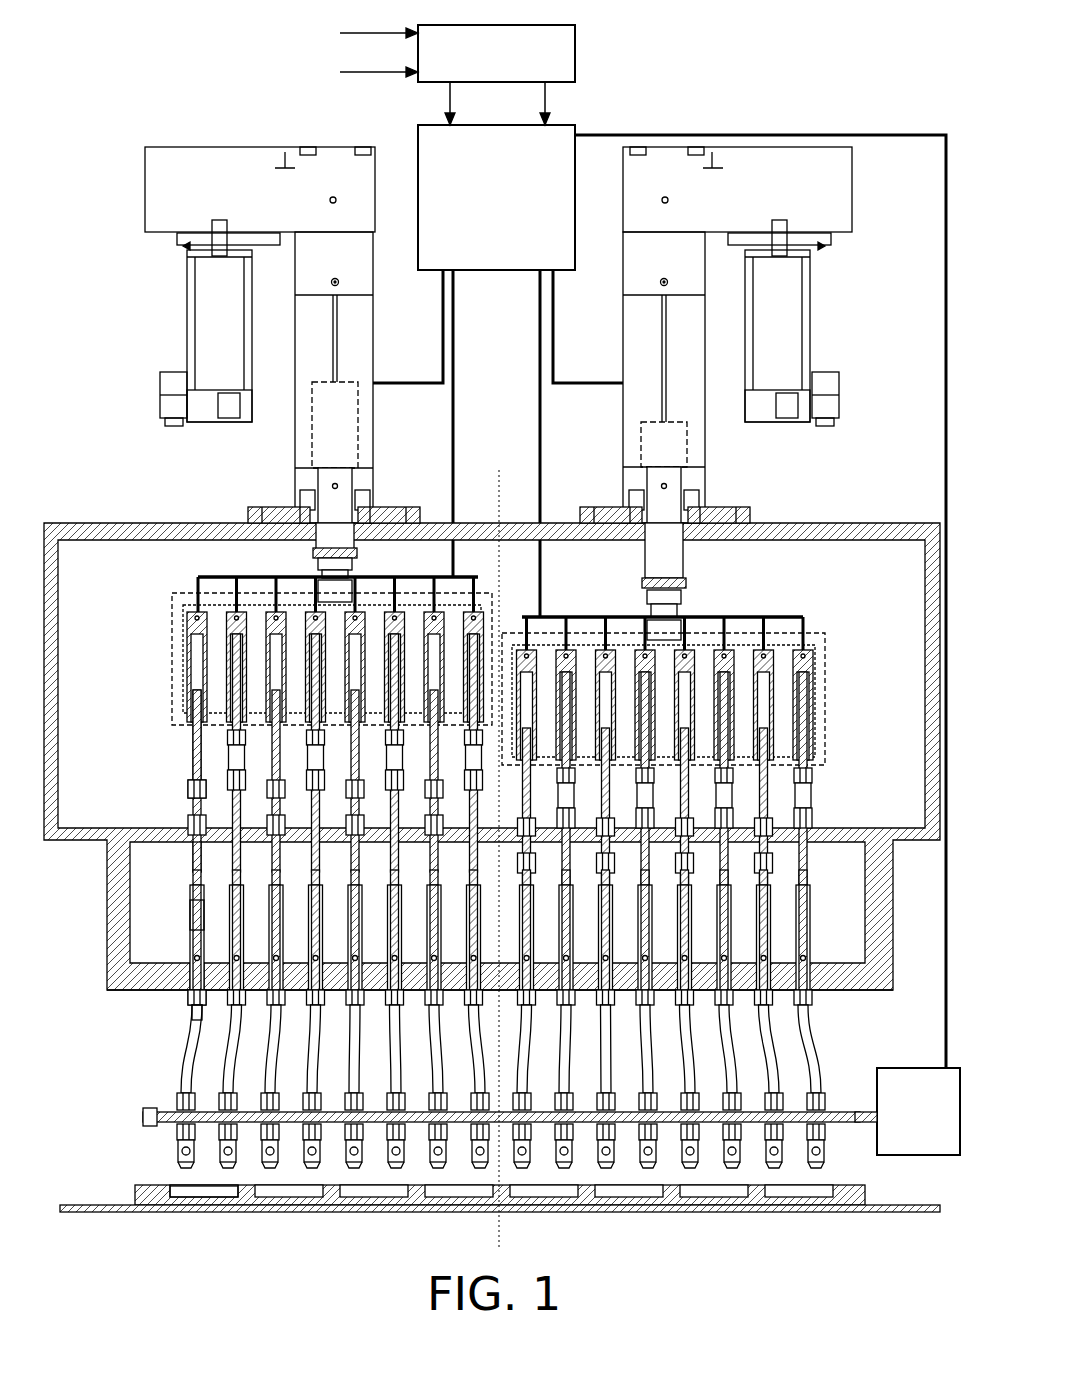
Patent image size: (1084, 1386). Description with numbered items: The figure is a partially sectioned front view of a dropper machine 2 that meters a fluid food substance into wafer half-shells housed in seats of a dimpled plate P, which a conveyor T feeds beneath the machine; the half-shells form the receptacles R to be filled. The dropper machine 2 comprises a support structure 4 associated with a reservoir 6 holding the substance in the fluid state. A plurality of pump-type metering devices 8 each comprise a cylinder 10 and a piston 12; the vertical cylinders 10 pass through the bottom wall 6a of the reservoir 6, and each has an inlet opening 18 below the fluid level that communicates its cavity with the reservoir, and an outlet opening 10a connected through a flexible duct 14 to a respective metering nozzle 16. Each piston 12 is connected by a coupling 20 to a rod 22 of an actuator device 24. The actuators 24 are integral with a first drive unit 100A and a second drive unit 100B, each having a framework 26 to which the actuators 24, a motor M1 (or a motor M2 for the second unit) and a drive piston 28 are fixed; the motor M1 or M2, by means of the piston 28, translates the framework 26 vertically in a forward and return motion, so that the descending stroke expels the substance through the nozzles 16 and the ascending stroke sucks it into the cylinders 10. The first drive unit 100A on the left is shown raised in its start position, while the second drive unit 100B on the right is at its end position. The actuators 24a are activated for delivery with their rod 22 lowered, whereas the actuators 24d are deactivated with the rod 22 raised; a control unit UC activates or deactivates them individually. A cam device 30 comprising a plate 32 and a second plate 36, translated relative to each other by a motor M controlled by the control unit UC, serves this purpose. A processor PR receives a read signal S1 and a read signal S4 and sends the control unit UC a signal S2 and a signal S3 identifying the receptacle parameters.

The dropper machine 2 is at (775, 123).
The support structure 4 is at (86, 512).
The reservoir 6 is at (108, 1010).
The bottom wall 6a is at (140, 1000).
The metering device 8 is at (190, 887).
The cylinder 10 is at (190, 918).
The outlet opening 10a is at (185, 1003).
The piston 12 is at (190, 858).
The flexible duct 14 is at (183, 1070).
The metering nozzle 16 is at (177, 1140).
The inlet opening 18 is at (190, 972).
The coupling 20 is at (190, 795).
The rod 22 is at (190, 740).
The actuator device 24 is at (186, 629).
The activated actuators 24a is at (268, 600).
The deactivated actuators 24d is at (818, 636).
The framework 26 is at (178, 655).
The piston 28 is at (358, 393).
The cam device 30 is at (832, 1102).
The plate 32 is at (843, 1112).
The second plate 36 is at (843, 1120).
The first drive unit 100A is at (262, 374).
The second drive unit 100B is at (745, 393).
The motor M1 is at (215, 330).
The motor M2 is at (782, 325).
The motor M is at (918, 1111).
The processor PR is at (496, 53).
The control unit UC is at (496, 197).
The signal S1 is at (379, 22).
The signal S2 is at (463, 103).
The signal S3 is at (558, 103).
The read signal S4 is at (379, 61).
The dimpled plate P is at (135, 1193).
The receptacle tray R is at (228, 1196).
The conveyor T is at (722, 1212).